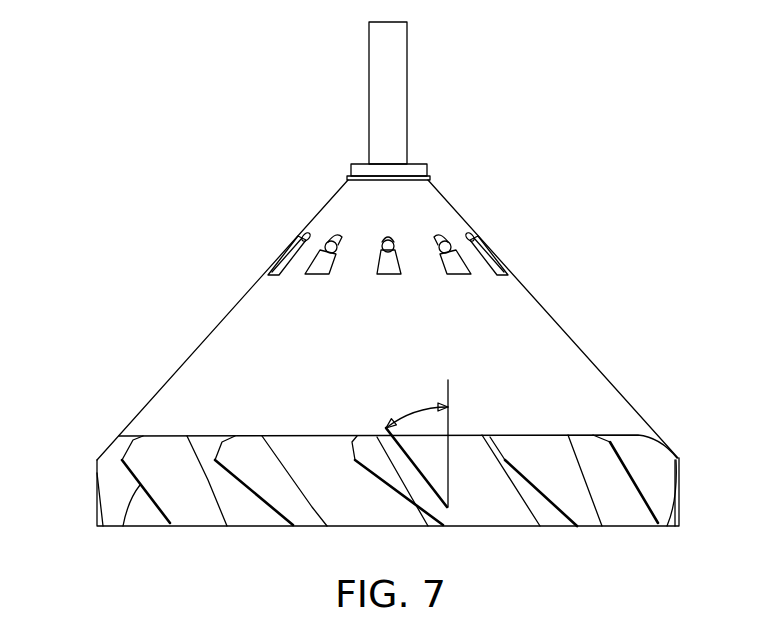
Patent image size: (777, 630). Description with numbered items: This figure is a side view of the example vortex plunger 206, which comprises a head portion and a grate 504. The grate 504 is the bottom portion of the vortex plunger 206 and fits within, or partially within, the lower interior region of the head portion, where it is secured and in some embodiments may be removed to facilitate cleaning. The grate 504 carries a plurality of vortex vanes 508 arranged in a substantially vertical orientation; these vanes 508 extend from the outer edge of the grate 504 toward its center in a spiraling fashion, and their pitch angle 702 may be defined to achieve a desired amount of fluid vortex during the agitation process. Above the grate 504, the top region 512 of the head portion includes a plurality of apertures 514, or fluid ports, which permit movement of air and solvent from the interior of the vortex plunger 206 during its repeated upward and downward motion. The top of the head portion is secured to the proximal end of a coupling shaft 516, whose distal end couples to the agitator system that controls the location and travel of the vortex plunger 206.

The vortex plunger 206 is at (668, 232).
The grate 504 is at (73, 488).
The vortex vanes 508 is at (163, 480).
The top region 512 is at (227, 313).
The apertures 514 is at (445, 248).
The coupling shaft 516 is at (398, 97).
The pitch angle 702 is at (417, 443).